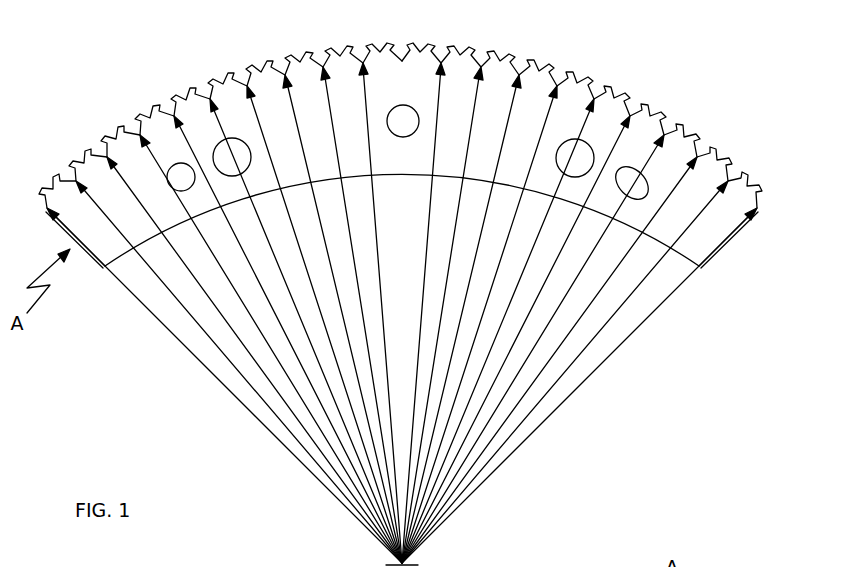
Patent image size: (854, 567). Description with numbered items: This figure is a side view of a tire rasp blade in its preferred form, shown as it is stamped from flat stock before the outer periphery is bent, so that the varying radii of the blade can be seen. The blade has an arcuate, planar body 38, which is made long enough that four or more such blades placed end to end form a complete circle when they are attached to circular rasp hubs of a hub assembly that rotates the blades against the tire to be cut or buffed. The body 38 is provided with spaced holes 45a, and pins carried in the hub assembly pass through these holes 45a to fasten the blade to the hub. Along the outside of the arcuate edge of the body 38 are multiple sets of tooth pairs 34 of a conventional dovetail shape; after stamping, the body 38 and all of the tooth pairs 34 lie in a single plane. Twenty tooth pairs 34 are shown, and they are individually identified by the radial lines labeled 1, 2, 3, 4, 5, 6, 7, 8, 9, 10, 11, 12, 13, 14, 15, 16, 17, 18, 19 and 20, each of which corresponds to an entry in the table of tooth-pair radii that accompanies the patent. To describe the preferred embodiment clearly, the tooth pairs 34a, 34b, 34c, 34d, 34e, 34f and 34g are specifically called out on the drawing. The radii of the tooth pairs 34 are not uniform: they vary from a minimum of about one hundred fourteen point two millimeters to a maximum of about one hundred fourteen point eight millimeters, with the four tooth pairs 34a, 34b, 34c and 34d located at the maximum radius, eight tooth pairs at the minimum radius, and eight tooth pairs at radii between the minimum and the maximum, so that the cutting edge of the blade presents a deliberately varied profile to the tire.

The tooth pairs 34 is at (160, 81).
The tooth pair 34a is at (118, 128).
The tooth pair 34b is at (192, 87).
The tooth pair 34c is at (291, 57).
The tooth pair 34d is at (379, 46).
The tooth pair 34e is at (533, 55).
The tooth pair 34f is at (598, 72).
The tooth pair 34g is at (688, 113).
The spaced holes 45a is at (408, 105).
The arcuate, planar body 38 is at (717, 230).
The tooth pair 1 is at (224, 385).
The tooth pair 2 is at (239, 372).
The tooth pair 3 is at (254, 360).
The tooth pair 4 is at (271, 349).
The tooth pair 5 is at (288, 339).
The tooth pair 6 is at (306, 331).
The tooth pair 7 is at (324, 324).
The tooth pair 8 is at (342, 319).
The tooth pair 9 is at (361, 315).
The tooth pair 10 is at (380, 313).
The tooth pair 11 is at (423, 313).
The tooth pair 12 is at (442, 315).
The tooth pair 13 is at (461, 319).
The tooth pair 14 is at (479, 324).
The tooth pair 15 is at (498, 331).
The tooth pair 16 is at (516, 339).
The tooth pair 17 is at (533, 349).
The tooth pair 18 is at (549, 360).
The tooth pair 19 is at (565, 372).
The tooth pair 20 is at (579, 385).